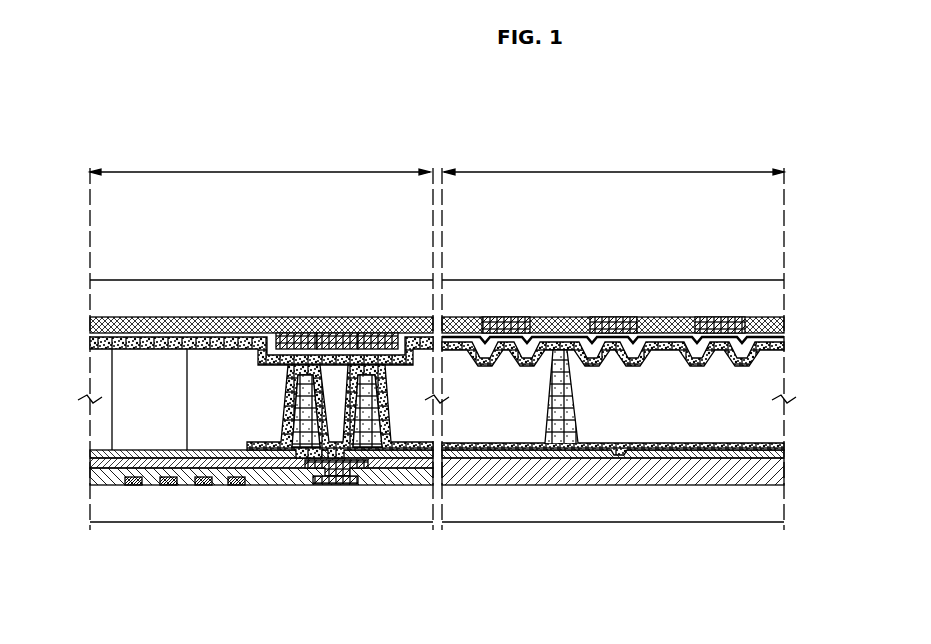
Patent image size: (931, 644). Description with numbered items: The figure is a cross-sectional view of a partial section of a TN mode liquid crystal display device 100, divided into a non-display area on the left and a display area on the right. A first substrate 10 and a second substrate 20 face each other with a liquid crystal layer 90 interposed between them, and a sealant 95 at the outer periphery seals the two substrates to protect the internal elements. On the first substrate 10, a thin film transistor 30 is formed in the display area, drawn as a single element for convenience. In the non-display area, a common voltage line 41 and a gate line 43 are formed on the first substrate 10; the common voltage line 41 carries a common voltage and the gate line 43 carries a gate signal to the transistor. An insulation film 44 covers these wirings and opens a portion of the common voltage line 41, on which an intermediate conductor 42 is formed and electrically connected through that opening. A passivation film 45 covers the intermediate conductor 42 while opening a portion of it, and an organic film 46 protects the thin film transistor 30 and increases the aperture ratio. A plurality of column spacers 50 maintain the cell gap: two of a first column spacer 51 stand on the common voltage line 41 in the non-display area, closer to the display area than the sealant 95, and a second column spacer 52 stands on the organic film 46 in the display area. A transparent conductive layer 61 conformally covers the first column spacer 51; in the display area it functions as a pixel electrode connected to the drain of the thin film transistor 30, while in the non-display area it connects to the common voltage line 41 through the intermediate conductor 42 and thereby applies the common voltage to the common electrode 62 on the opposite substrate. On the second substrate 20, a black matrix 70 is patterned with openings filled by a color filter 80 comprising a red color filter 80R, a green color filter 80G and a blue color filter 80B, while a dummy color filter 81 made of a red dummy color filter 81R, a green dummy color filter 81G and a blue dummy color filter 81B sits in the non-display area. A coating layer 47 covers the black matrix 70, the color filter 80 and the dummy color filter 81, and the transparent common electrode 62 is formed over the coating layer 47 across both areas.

The display device 100 is at (550, 86).
The first substrate 10 is at (96, 505).
The second substrate 20 is at (96, 300).
The thin film transistor 30 is at (707, 480).
The common voltage line 41 is at (337, 486).
The intermediate conductor 42 is at (312, 470).
The gate line 43 is at (202, 486).
The insulation film 44 is at (96, 478).
The passivation film 45 is at (96, 463).
The organic film 46 is at (96, 452).
The coating layer 47 is at (96, 340).
The column spacers 50 is at (412, 477).
The first column spacer 51 is at (368, 425).
The second column spacer 52 is at (562, 433).
The conductive layer 61 is at (785, 447).
The common electrode 62 is at (785, 345).
The black matrix 70 is at (96, 325).
The color filter 80 is at (613, 264).
The red color filter 80R is at (510, 337).
The green color filter 80G is at (612, 337).
The blue color filter 80B is at (718, 337).
The dummy color filter 81 is at (337, 271).
The red dummy color filter 81R is at (297, 338).
The green dummy color filter 81G is at (336, 338).
The blue dummy color filter 81B is at (380, 338).
The liquid crystal layer 90 is at (785, 415).
The sealant 95 is at (127, 383).